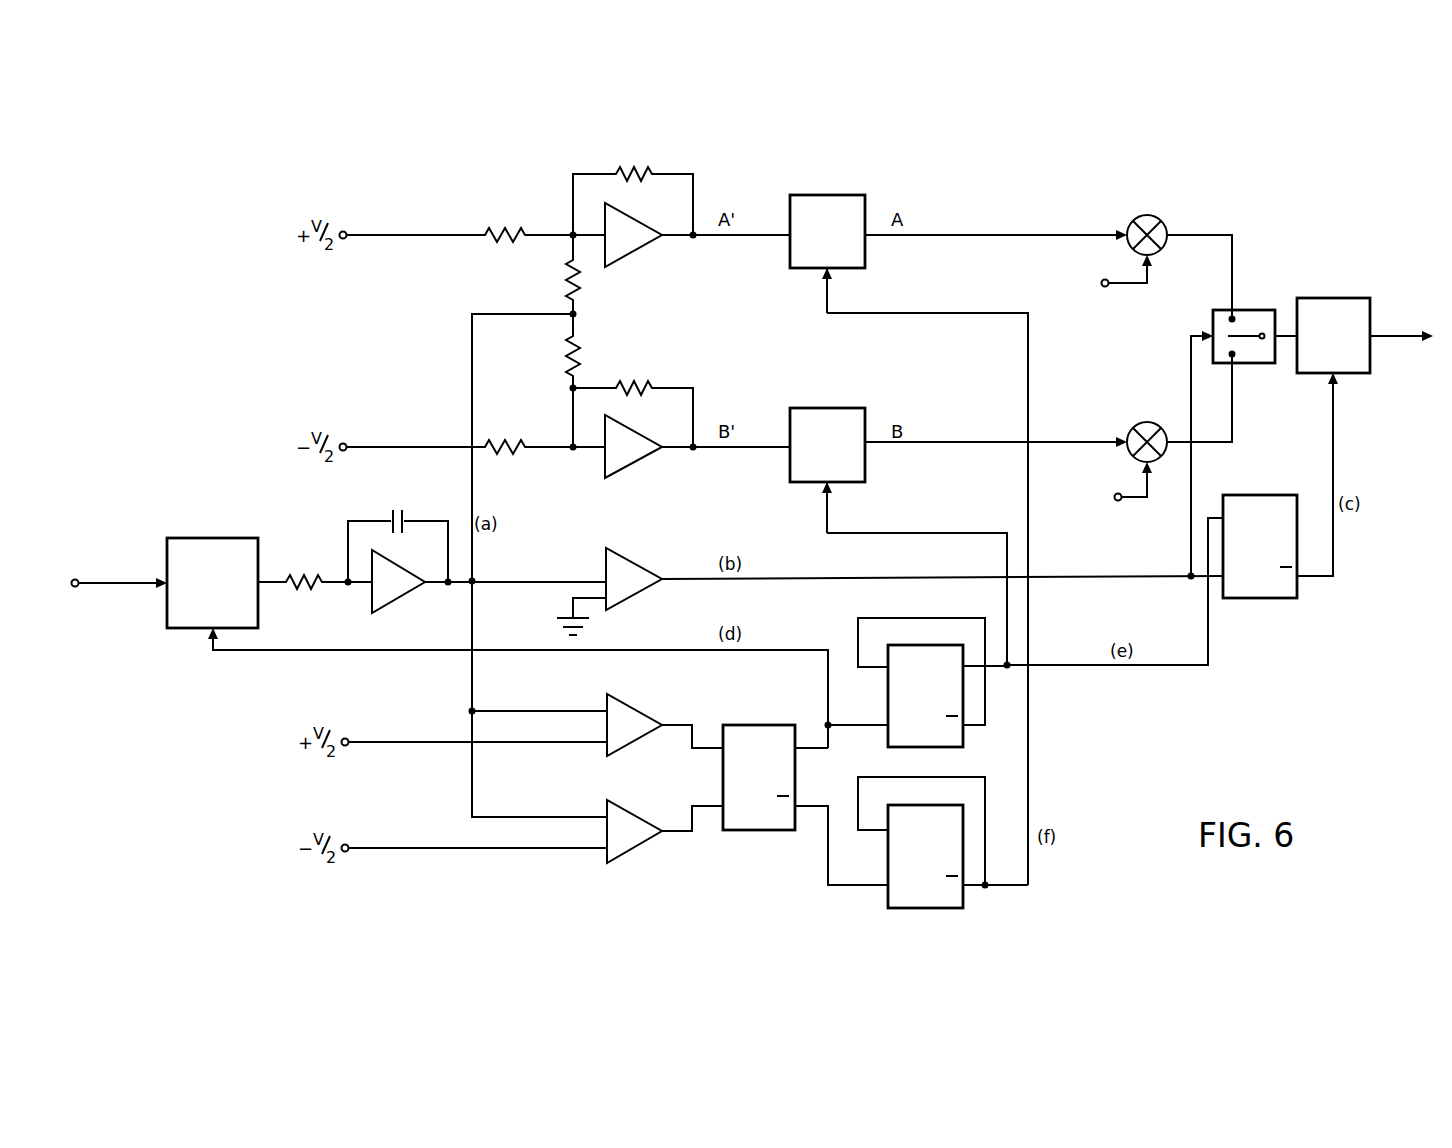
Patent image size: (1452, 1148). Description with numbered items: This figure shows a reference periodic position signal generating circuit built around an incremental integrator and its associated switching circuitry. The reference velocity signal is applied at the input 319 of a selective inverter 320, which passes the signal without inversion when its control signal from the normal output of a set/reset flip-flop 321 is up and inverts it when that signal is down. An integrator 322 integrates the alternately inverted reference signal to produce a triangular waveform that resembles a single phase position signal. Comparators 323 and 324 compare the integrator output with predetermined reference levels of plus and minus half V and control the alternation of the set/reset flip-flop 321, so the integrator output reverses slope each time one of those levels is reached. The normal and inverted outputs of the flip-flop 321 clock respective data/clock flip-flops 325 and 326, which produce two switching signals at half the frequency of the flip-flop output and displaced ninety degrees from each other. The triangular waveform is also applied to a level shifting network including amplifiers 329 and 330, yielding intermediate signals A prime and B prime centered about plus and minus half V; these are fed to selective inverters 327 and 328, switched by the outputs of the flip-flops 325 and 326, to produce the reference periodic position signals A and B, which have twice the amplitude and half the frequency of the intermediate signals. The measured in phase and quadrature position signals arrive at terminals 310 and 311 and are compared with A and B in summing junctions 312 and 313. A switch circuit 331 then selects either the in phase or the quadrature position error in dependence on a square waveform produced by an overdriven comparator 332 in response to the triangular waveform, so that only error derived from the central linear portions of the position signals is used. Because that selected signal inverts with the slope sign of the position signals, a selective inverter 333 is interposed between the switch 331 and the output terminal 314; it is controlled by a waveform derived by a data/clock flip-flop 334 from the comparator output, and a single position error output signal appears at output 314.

The terminal 310 is at (1106, 282).
The terminal 311 is at (1119, 495).
The summing junction 312 is at (1158, 213).
The summing junction 313 is at (1137, 427).
The output terminal 314 is at (1395, 338).
The input 319 is at (78, 587).
The selective inverter 320 is at (203, 538).
The set/reset flip-flop 321 is at (775, 830).
The integrator 322 is at (380, 512).
The comparator 323 is at (630, 745).
The comparator 324 is at (630, 848).
The data/clock flip-flop 325 is at (963, 740).
The data/clock flip-flop 326 is at (935, 908).
The selective inverter 327 is at (817, 195).
The selective inverter 328 is at (832, 408).
The amplifier 329 is at (637, 247).
The amplifier 330 is at (637, 459).
The switch circuit 331 is at (1213, 324).
The overdriven comparator 332 is at (632, 592).
The selective inverter 333 is at (1341, 298).
The data/clock flip-flop 334 is at (1253, 598).